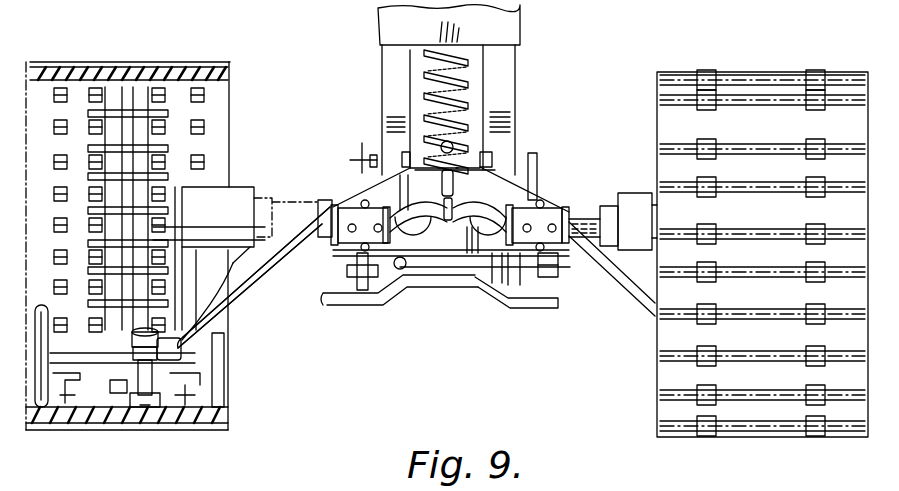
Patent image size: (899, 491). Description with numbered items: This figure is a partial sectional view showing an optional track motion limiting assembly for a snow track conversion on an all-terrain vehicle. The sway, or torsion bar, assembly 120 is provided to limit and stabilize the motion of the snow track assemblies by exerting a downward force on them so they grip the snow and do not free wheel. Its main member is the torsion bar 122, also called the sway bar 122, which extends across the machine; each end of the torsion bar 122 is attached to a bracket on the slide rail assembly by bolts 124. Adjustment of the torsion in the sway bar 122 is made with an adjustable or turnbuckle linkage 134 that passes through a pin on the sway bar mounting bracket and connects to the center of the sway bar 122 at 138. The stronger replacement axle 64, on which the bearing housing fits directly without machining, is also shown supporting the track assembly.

The replacement axle 64 is at (602, 200).
The sway or torsion bar assembly 120 is at (243, 306).
The torsion bar 122 is at (305, 237).
The bolts 124 is at (150, 415).
The turnbuckle linkage 134 is at (472, 178).
The center of sway bar 138 is at (467, 245).